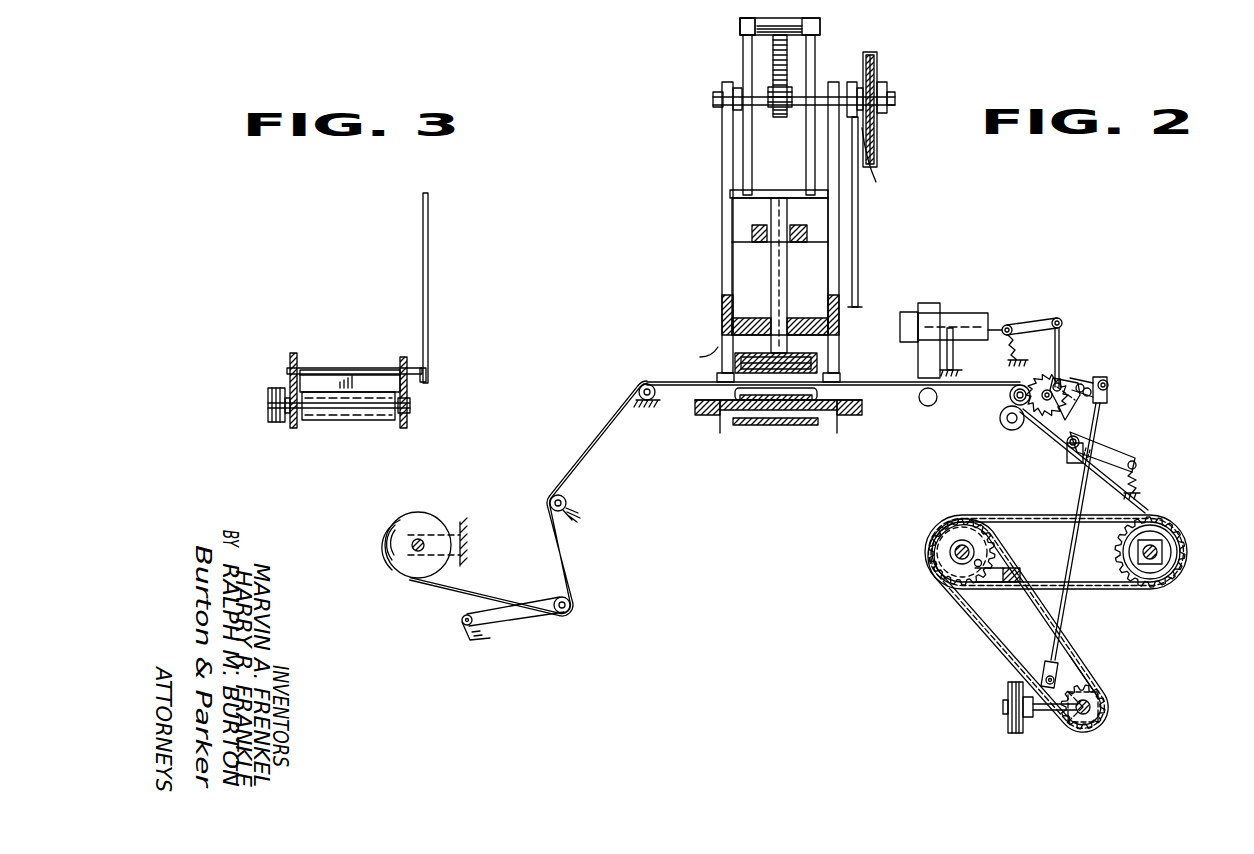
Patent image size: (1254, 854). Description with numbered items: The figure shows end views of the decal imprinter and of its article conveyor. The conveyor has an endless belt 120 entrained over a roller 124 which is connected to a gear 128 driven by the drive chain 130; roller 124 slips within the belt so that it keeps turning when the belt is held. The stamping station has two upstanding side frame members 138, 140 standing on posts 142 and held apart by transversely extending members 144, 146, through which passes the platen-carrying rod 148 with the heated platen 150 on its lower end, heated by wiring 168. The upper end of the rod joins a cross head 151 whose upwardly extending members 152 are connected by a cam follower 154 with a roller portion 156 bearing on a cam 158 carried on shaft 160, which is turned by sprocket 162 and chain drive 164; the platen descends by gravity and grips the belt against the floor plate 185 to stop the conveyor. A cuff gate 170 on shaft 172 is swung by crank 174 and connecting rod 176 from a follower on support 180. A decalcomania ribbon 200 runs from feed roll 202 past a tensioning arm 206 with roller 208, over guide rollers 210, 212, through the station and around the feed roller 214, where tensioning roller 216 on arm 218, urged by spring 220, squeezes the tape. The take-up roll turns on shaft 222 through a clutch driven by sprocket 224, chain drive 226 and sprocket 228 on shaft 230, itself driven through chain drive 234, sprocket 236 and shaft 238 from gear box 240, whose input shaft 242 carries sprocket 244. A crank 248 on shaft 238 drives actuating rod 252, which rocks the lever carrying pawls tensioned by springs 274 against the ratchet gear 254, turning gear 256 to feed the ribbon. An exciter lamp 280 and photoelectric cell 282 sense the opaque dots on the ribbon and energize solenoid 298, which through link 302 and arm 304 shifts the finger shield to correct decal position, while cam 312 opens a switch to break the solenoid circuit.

In FIG. 3, the endless belt 120 is at (356, 421).
In FIG. 3, the roller 124 is at (410, 402).
In FIG. 3, the gear 128 is at (270, 420).
In FIG. 3, the drive chain 130 is at (282, 388).
In FIG. 3, the cuff gate 170 is at (318, 378).
In FIG. 3, the shaft 172 is at (350, 372).
In FIG. 3, the crank 174 is at (418, 372).
In FIG. 3, the connecting rod 176 is at (429, 245).
In FIG. 2, the connecting rod 176 is at (858, 211).
In FIG. 2, the side frame member 138 is at (722, 283).
In FIG. 2, the side frame member 140 is at (830, 246).
In FIG. 2, the posts 142 is at (722, 323).
In FIG. 2, the transversely extending member 144 is at (744, 242).
In FIG. 2, the transversely extending member 146 is at (750, 318).
In FIG. 2, the platen-carrying rod 148 is at (788, 291).
In FIG. 2, the platen 150 is at (818, 360).
In FIG. 2, the cross head 151 is at (772, 192).
In FIG. 2, the upwardly extending members 152 is at (808, 146).
In FIG. 2, the cam follower 154 is at (740, 28).
In FIG. 2, the roller portion 156 is at (786, 18).
In FIG. 2, the cam 158 is at (781, 58).
In FIG. 2, the shaft 160 is at (772, 101).
In FIG. 2, the sprocket 162 is at (877, 66).
In FIG. 2, the chain drive 164 is at (878, 163).
In FIG. 2, the wiring 168 is at (688, 355).
In FIG. 2, the support 180 is at (882, 164).
In FIG. 2, the floor plate 185 is at (762, 426).
In FIG. 2, the web H is at (735, 393).
In FIG. 2, the decalcomania ribbon 200 is at (586, 453).
In FIG. 2, the feed roll 202 is at (441, 525).
In FIG. 2, the ribbon-tensioning arm 206 is at (516, 621).
In FIG. 2, the roller 208 is at (558, 597).
In FIG. 2, the guide roller 210 is at (568, 497).
In FIG. 2, the guide roller 212 is at (653, 399).
In FIG. 2, the feed roller 214 is at (1010, 396).
In FIG. 2, the tensioning roller 216 is at (1004, 426).
In FIG. 2, the arm 218 is at (1118, 458).
In FIG. 2, the spring 220 is at (1138, 480).
In FIG. 2, the shaft 222 is at (1163, 553).
In FIG. 2, the sprocket 224 is at (1115, 574).
In FIG. 2, the chain drive 226 is at (1048, 508).
In FIG. 2, the sprocket 228 is at (998, 522).
In FIG. 2, the shaft 230 is at (954, 550).
In FIG. 2, the chain drive 234 is at (990, 638).
In FIG. 2, the sprocket 236 is at (1088, 673).
In FIG. 2, the shaft 238 is at (1092, 708).
In FIG. 2, the gear box 240 is at (1098, 733).
In FIG. 2, the shaft 242 is at (1045, 712).
In FIG. 2, the sprocket 244 is at (1007, 727).
In FIG. 2, the crank 248 is at (1099, 694).
In FIG. 2, the actuating rod 252 is at (1075, 530).
In FIG. 2, the ratchet gear 254 is at (1060, 376).
In FIG. 2, the gear 256 is at (1000, 583).
In FIG. 2, the springs 274 is at (1082, 380).
In FIG. 2, the exciter lamp 280 is at (918, 366).
In FIG. 2, the photoelectric cell 282 is at (926, 406).
In FIG. 2, the solenoid 298 is at (978, 313).
In FIG. 2, the link 302 is at (1032, 325).
In FIG. 2, the arm 304 is at (1057, 357).
In FIG. 2, the cam 312 is at (975, 565).